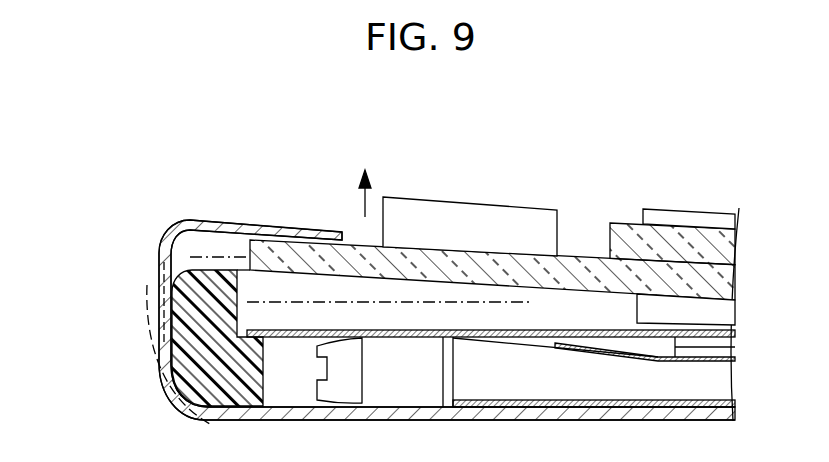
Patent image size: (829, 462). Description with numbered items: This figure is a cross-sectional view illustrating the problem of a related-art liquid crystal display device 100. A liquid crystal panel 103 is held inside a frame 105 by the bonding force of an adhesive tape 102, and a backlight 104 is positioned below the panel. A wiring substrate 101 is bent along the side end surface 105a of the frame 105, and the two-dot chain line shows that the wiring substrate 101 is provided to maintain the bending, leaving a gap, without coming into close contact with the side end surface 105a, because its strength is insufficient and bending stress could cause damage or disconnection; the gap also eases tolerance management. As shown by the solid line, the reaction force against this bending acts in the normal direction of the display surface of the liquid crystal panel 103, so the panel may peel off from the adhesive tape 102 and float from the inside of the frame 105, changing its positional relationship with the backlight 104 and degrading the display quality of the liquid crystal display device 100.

The liquid crystal display device 100 is at (675, 135).
The wiring substrate 101 is at (161, 283).
The adhesive tape 102 is at (697, 237).
The liquid crystal panel 103 is at (748, 215).
The backlight 104 is at (750, 330).
The frame 105 is at (203, 277).
The side end surface 105a is at (167, 350).